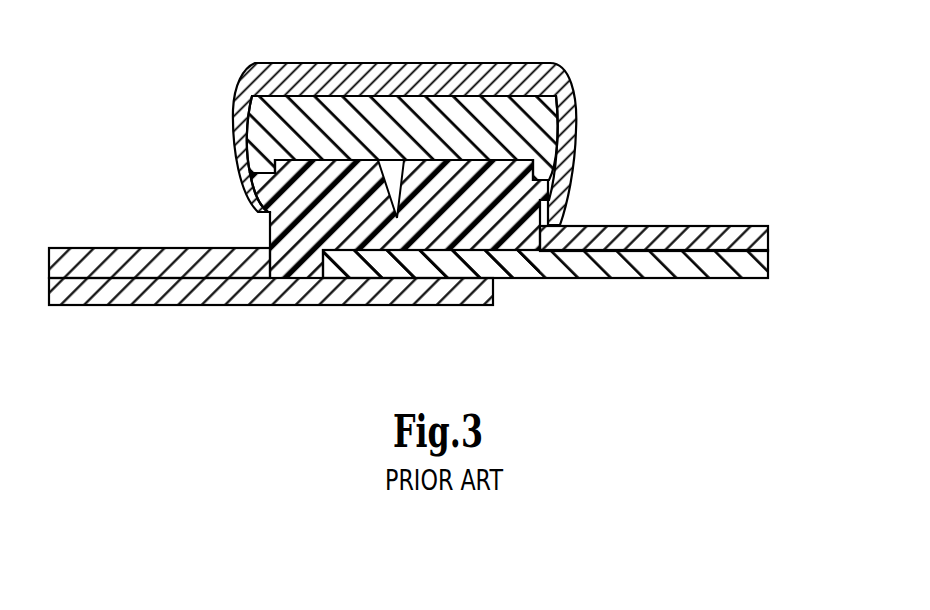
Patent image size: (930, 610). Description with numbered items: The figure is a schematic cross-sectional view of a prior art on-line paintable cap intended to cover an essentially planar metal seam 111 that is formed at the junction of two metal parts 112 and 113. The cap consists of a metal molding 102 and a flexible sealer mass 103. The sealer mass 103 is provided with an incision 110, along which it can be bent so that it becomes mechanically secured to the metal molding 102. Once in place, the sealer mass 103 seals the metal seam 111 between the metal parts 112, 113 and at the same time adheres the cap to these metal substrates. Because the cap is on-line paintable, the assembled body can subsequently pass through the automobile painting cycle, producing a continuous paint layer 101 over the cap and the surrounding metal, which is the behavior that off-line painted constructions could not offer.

The paint layer 101 is at (570, 135).
The metal molding 102 is at (386, 122).
The flexible sealer mass 103 is at (302, 245).
The incision 110 is at (413, 187).
The metal seam 111 is at (325, 277).
The metal part 112 is at (85, 295).
The metal part 113 is at (683, 263).